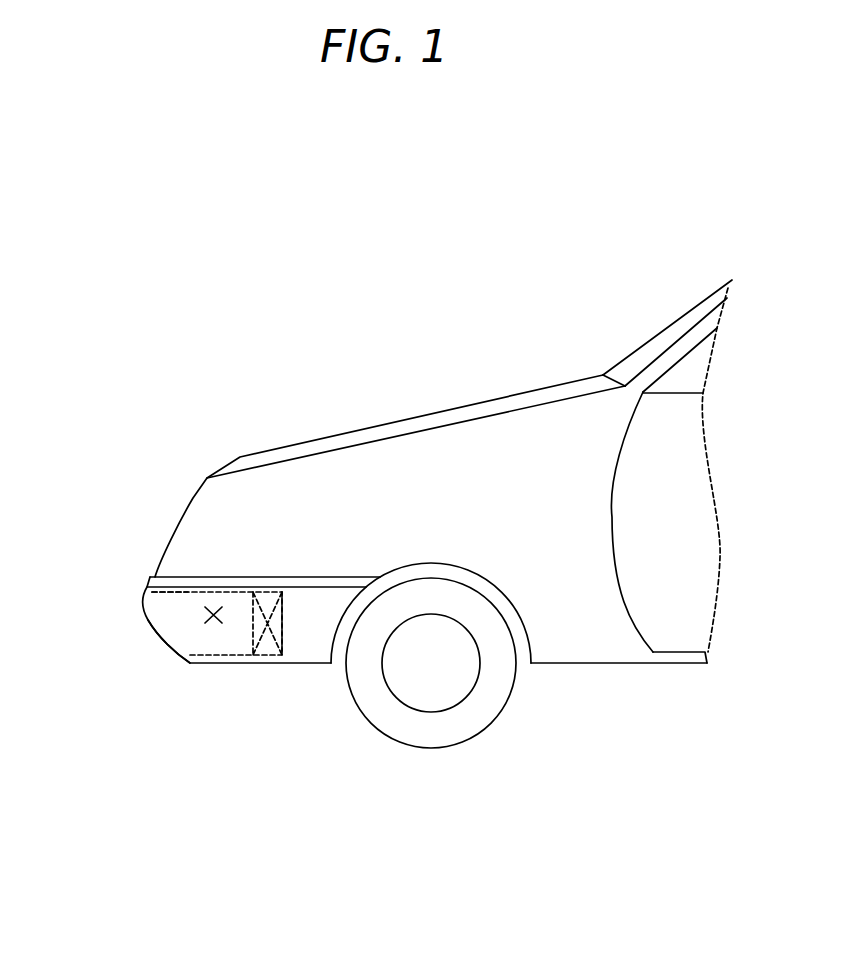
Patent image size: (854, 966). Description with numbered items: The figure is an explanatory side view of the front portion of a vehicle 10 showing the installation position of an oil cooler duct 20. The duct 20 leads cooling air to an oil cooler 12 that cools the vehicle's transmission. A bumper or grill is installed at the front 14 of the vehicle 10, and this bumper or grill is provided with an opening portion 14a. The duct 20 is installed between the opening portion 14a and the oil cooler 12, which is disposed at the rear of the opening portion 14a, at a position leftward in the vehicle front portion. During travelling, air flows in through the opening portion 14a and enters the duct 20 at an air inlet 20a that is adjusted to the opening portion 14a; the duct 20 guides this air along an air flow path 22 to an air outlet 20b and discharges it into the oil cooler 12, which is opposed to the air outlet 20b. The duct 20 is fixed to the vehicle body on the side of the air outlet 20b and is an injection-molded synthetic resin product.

The vehicle 10 is at (378, 410).
The oil cooler 12 is at (267, 624).
The front 14 is at (148, 578).
The opening portion 14a is at (145, 620).
The duct 20 is at (213, 655).
The air inlet 20a is at (157, 636).
The air outlet 20b is at (272, 626).
The air flow path 22 is at (213, 603).